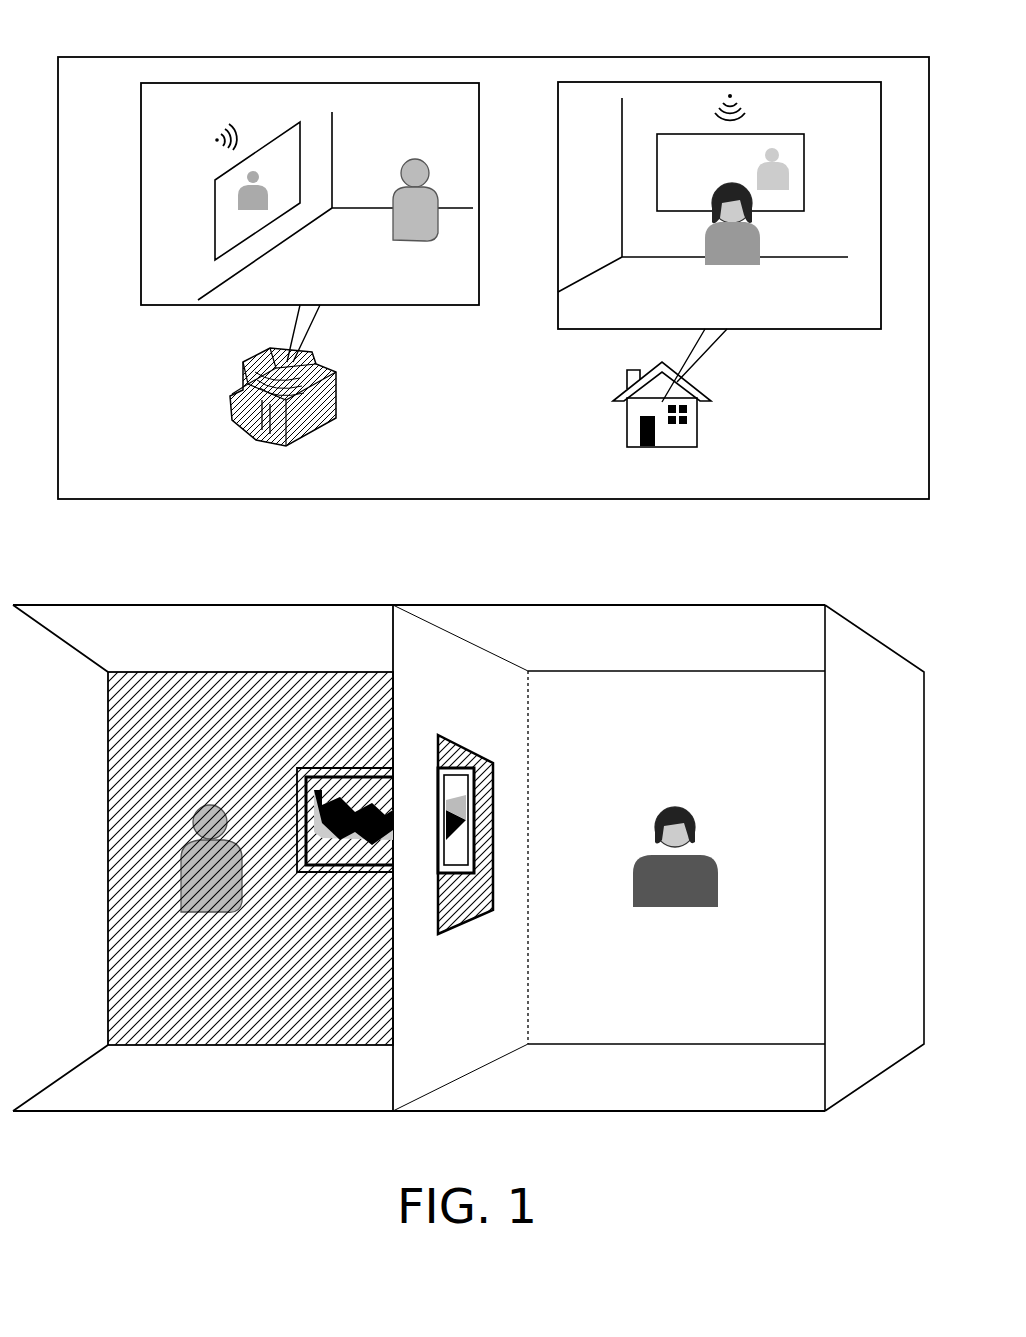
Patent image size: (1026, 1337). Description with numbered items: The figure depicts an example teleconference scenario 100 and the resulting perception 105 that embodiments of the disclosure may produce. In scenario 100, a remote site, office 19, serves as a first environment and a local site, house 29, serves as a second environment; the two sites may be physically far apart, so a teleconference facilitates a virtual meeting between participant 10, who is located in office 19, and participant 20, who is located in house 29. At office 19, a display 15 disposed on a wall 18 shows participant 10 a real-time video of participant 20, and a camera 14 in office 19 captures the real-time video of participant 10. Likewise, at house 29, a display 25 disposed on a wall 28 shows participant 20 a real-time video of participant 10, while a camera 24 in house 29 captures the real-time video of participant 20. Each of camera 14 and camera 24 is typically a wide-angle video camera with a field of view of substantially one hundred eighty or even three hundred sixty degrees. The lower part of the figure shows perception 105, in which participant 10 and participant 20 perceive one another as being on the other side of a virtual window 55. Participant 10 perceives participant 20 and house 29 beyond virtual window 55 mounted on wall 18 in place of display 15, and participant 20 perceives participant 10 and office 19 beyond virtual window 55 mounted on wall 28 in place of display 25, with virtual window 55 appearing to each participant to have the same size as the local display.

The scenario 100 is at (139, 50).
The perception 105 is at (136, 598).
The participant 10 is at (427, 266).
The camera 14 is at (215, 152).
The display 15 is at (306, 146).
The wall 18 is at (196, 263).
The office 19 is at (322, 466).
The participant 20 is at (745, 294).
The camera 24 is at (754, 102).
The display 25 is at (811, 152).
The wall 28 is at (848, 232).
The house 29 is at (676, 480).
The virtual window 55 is at (466, 740).